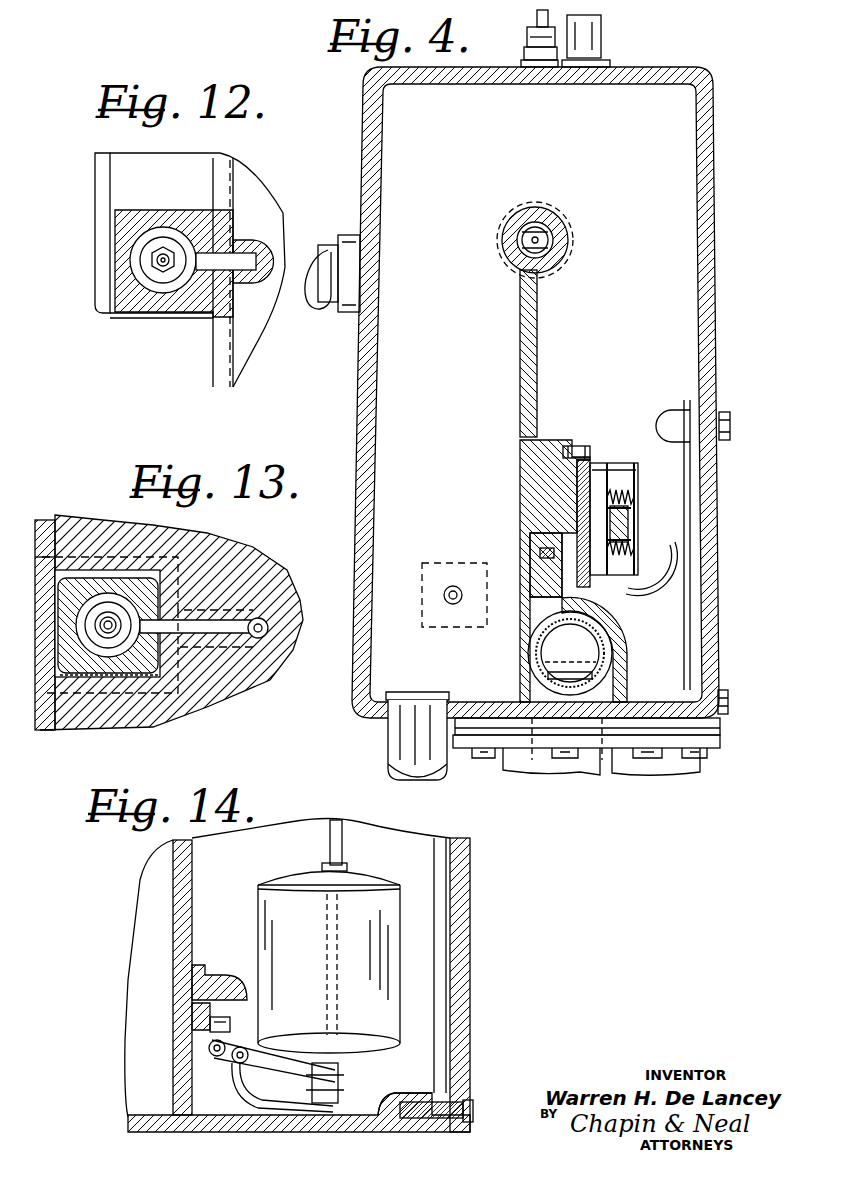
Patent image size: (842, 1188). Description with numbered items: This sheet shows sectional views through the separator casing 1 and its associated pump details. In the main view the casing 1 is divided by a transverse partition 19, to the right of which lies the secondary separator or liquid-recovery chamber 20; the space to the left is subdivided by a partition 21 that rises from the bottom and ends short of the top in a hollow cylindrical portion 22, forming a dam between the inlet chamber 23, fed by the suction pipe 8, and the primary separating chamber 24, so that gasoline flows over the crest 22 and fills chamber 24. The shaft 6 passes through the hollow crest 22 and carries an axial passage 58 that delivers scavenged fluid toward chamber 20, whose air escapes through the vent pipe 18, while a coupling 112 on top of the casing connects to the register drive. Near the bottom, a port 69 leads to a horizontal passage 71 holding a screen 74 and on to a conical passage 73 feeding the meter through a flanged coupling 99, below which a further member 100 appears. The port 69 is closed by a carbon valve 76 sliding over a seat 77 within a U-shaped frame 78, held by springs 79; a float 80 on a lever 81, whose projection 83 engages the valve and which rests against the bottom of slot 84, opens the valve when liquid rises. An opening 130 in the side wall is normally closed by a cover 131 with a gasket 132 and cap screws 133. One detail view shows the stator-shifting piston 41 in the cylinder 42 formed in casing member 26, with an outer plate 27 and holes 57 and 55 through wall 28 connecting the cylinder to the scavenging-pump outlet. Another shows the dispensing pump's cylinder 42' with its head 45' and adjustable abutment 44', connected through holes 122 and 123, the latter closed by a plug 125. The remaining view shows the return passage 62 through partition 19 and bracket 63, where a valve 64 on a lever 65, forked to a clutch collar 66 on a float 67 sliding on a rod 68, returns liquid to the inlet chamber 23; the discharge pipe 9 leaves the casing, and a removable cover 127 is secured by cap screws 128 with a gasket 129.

In FIG. 4, the casing 1 is at (712, 120).
In FIG. 12, the casing 1 is at (250, 186).
In FIG. 14, the casing 1 is at (338, 1132).
In FIG. 4, the shaft 6 is at (553, 215).
In FIG. 4, the suction pipe 8 is at (395, 748).
In FIG. 4, the discharge pipe 9 is at (318, 308).
In FIG. 4, the vent pipe 18 is at (537, 20).
In FIG. 14, the transverse partition 19 is at (180, 897).
In FIG. 14, the secondary separator chamber 20 is at (375, 830).
In FIG. 4, the partition 21 is at (521, 310).
In FIG. 4, the hollow cylindrical portion 22 is at (531, 215).
In FIG. 4, the inlet chamber 23 is at (429, 475).
In FIG. 14, the inlet chamber 23 is at (148, 953).
In FIG. 4, the primary separating chamber 24 is at (621, 296).
In FIG. 12, the casing member 26 is at (166, 166).
In FIG. 12, the outer plate 27 is at (102, 162).
In FIG. 12, the wall 28 is at (185, 320).
In FIG. 12, the piston 41 is at (148, 275).
In FIG. 12, the cylinder 42 is at (114, 260).
In FIG. 13, the cylinder 42' is at (126, 674).
In FIG. 13, the adjustable abutment 44' is at (107, 664).
In FIG. 13, the head 45' is at (106, 668).
In FIG. 12, the hole 55 is at (266, 258).
In FIG. 12, the hole 57 is at (236, 258).
In FIG. 4, the axial passage 58 is at (522, 240).
In FIG. 4, the passage 62 is at (455, 586).
In FIG. 14, the passage 62 is at (180, 997).
In FIG. 14, the bracket 63 is at (214, 985).
In FIG. 14, the valve 64 is at (232, 1023).
In FIG. 14, the lever 65 is at (278, 1075).
In FIG. 14, the clutch collar 66 is at (340, 1083).
In FIG. 14, the float 67 is at (329, 963).
In FIG. 14, the vertical rod 68 is at (330, 845).
In FIG. 4, the port 69 is at (545, 552).
In FIG. 4, the horizontal passage 71 is at (606, 660).
In FIG. 4, the conical passage 73 is at (520, 683).
In FIG. 4, the screen 74 is at (522, 632).
In FIG. 4, the valve 76 is at (600, 475).
In FIG. 4, the seat 77 is at (584, 468).
In FIG. 4, the U-shaped metal frame 78 is at (638, 471).
In FIG. 4, the springs 79 is at (634, 495).
In FIG. 4, the float 80 is at (635, 600).
In FIG. 4, the lever 81 is at (628, 520).
In FIG. 4, the projection 83 is at (576, 520).
In FIG. 4, the slot 84 is at (616, 522).
In FIG. 4, the flanged coupling 99 is at (612, 766).
In FIG. 4, the mounting bracket 100 is at (708, 757).
In FIG. 4, the coupling 112 is at (600, 42).
In FIG. 13, the hole 122 is at (228, 630).
In FIG. 13, the hole 123 is at (262, 636).
In FIG. 13, the plug 125 is at (270, 622).
In FIG. 13, the removable cover 127 is at (42, 722).
In FIG. 14, the removable cover 127 is at (455, 1012).
In FIG. 14, the cap screws 128 is at (470, 1123).
In FIG. 14, the gasket 129 is at (432, 1128).
In FIG. 4, the opening 130 is at (691, 657).
In FIG. 4, the cover 131 is at (712, 602).
In FIG. 4, the gasket 132 is at (703, 405).
In FIG. 4, the cap screws 133 is at (731, 426).